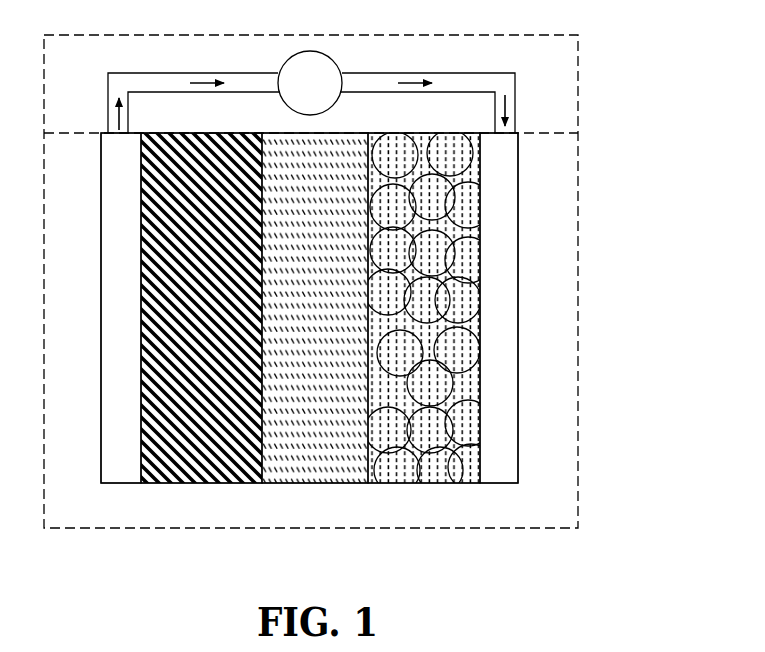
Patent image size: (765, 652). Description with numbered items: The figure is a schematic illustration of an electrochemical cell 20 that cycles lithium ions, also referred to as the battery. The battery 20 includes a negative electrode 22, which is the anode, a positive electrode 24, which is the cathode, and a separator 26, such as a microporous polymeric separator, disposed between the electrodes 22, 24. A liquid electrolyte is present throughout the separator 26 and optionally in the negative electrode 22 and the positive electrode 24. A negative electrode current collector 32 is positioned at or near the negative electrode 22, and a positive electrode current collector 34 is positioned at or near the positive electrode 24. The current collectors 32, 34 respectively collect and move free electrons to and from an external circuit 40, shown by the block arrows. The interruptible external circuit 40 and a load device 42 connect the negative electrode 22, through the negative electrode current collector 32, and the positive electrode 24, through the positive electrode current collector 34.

The electrochemical cell 20 is at (586, 192).
The negative electrode 22 is at (207, 493).
The positive electrode 24 is at (427, 493).
The separator 26 is at (321, 493).
The negative electrode current collector 32 is at (115, 383).
The positive electrode current collector 34 is at (507, 383).
The external circuit 40 is at (586, 87).
The load device 42 is at (310, 83).